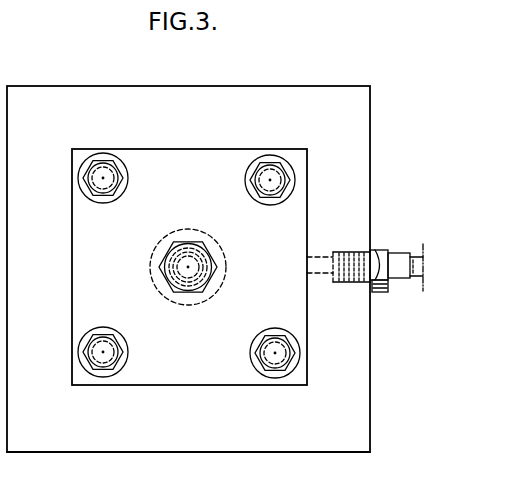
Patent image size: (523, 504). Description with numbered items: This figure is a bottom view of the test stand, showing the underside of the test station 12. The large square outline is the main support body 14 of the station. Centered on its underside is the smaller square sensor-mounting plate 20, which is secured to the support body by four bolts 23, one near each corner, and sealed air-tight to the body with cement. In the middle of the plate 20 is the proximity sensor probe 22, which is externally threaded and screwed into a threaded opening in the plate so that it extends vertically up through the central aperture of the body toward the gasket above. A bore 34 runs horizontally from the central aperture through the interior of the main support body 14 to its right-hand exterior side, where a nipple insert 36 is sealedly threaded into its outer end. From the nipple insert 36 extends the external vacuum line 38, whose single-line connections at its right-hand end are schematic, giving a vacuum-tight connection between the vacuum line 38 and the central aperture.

The test station 12 is at (343, 84).
The main support body 14 is at (118, 455).
The sensor-mounting plate 20 is at (78, 253).
The proximity sensor probe 22 is at (170, 262).
The bolts 23 is at (103, 165).
The bore 34 is at (325, 262).
The nipple insert 36 is at (355, 247).
The external vacuum line 38 is at (418, 280).